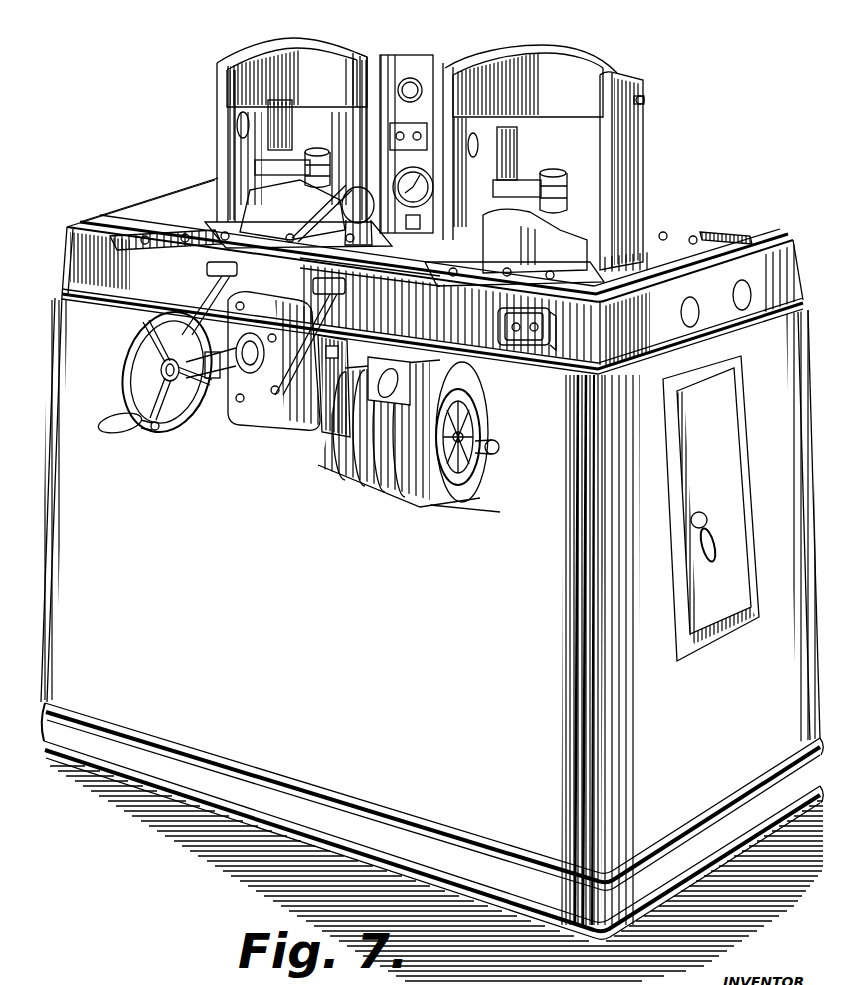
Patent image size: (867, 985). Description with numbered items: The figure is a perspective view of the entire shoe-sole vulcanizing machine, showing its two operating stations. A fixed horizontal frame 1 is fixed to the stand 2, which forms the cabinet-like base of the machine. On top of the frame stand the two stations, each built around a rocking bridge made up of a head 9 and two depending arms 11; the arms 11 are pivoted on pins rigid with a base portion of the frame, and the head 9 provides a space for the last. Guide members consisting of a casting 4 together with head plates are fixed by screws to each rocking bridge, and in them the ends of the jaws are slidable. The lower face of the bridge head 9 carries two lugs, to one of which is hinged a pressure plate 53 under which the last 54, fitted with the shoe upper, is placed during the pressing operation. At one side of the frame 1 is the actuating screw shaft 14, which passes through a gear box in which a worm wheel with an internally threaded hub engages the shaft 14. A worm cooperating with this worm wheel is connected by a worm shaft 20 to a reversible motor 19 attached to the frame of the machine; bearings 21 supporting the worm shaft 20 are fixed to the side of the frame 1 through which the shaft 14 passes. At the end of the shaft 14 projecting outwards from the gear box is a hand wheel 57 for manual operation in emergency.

The horizontal frame 1 is at (752, 248).
The stand 2 is at (431, 638).
The casting 4 is at (492, 278).
The head 9 is at (417, 77).
The depending arms 11 is at (378, 60).
The actuating screw shaft 14 is at (246, 430).
The reversible motor 19 is at (396, 497).
The worm shaft 20 is at (503, 447).
The bearings 21 is at (212, 290).
The pressure plate 53 is at (275, 162).
The last 54 is at (248, 222).
The hand wheel 57 is at (180, 432).